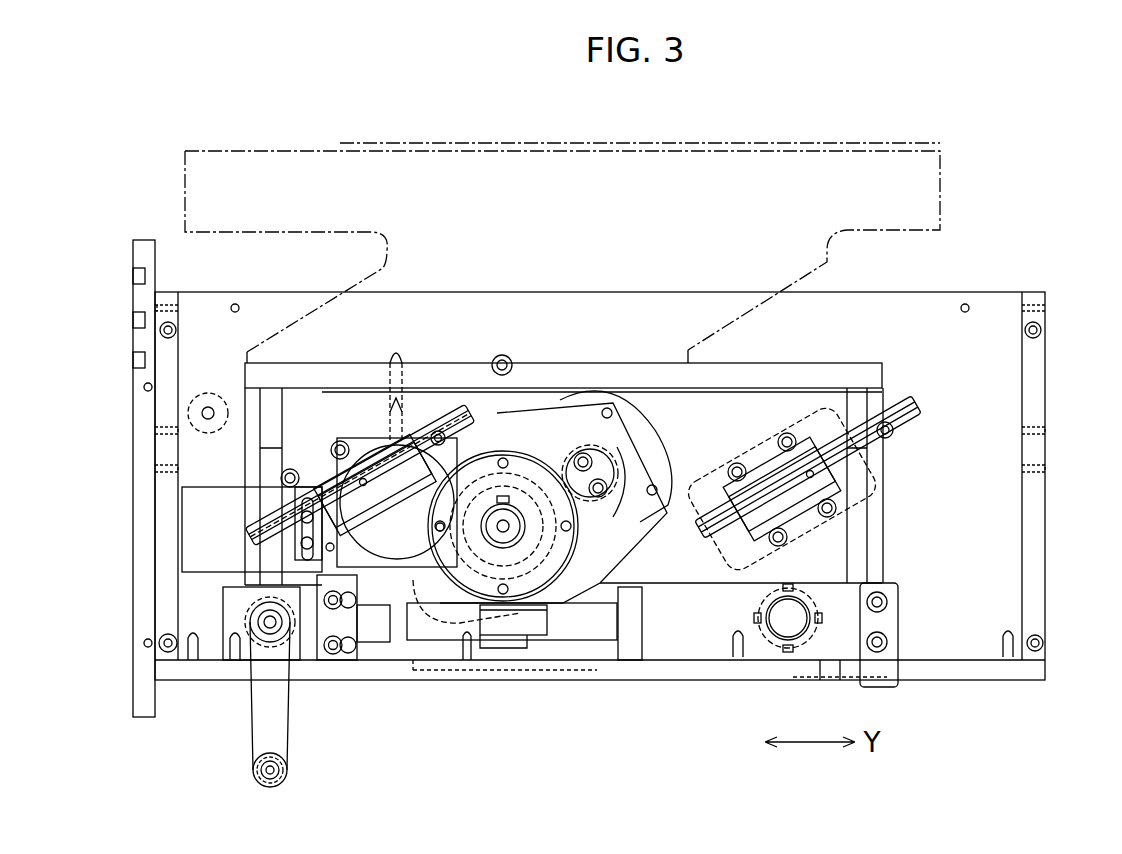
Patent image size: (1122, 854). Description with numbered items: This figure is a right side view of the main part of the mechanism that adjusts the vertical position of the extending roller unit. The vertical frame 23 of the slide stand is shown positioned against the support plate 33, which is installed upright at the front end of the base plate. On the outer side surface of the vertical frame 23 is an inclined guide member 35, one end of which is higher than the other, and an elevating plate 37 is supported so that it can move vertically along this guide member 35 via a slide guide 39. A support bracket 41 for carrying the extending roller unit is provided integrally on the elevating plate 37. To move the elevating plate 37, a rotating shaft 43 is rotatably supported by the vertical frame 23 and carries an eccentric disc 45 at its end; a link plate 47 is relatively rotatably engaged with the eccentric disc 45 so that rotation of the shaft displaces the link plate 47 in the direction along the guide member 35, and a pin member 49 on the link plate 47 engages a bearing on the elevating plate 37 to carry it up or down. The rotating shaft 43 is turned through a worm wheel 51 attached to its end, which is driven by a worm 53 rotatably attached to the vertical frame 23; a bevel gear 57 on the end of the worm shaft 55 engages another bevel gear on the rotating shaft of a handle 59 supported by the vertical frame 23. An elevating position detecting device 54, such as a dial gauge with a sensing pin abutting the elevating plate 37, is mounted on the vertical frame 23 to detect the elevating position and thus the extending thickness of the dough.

The vertical frame 23 is at (983, 647).
The support plate 33 is at (133, 618).
The guide member 35 is at (446, 415).
The elevating plate 37 is at (815, 388).
The slide guide 39 is at (863, 490).
The support bracket 41 is at (940, 175).
The rotating shaft 43 is at (513, 528).
The eccentric disc 45 is at (418, 625).
The link plate 47 is at (524, 430).
The pin member 49 is at (632, 440).
The worm wheel 51 is at (560, 572).
The worm 53 is at (510, 640).
The worm shaft 55 is at (560, 630).
The elevating position detecting device 54 is at (352, 565).
The bevel gear 57 is at (290, 660).
The handle 59 is at (255, 728).